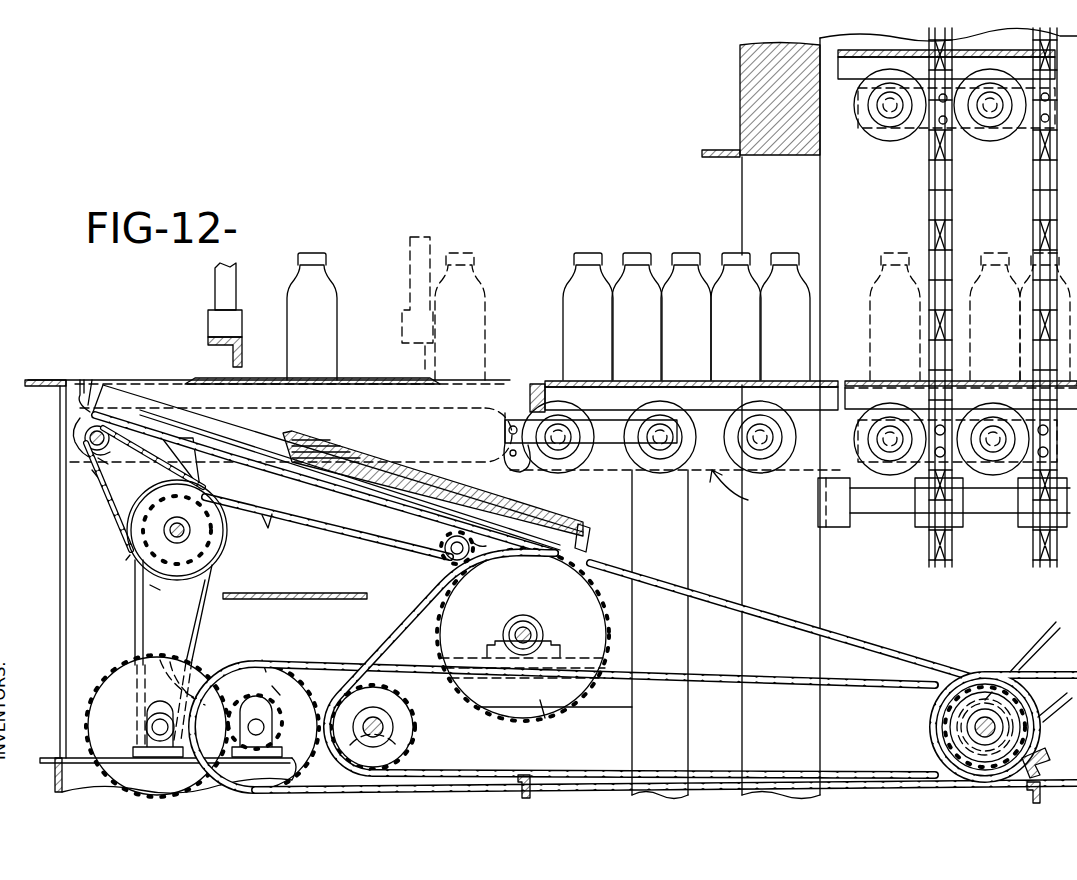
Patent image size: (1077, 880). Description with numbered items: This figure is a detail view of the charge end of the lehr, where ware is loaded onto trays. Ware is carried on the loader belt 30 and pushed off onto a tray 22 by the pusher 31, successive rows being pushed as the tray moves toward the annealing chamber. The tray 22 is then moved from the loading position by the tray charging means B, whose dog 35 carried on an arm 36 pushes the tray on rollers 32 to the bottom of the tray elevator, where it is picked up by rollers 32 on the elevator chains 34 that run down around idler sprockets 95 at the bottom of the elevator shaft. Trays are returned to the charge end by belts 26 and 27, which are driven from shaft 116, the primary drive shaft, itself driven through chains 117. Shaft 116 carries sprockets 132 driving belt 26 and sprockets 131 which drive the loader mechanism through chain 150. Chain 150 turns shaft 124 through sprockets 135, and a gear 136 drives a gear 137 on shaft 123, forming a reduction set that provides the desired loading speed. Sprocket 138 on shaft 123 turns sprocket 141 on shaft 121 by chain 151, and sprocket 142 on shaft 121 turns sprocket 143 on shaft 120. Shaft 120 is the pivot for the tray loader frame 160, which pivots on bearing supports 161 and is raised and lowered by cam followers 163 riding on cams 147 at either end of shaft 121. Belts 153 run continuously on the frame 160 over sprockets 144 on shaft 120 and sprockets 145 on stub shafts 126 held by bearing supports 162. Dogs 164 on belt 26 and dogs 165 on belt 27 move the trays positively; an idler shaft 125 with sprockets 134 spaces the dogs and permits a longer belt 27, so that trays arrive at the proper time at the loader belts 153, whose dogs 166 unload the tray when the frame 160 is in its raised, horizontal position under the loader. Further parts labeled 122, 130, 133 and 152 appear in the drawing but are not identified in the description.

The tray 22 is at (515, 512).
The belt 26 is at (1047, 735).
The belt 27 is at (858, 633).
The belt 30 is at (250, 380).
The pusher 31 is at (210, 354).
The rollers 32 is at (655, 462).
The elevator chains 34 is at (1035, 208).
The dog 35 is at (528, 405).
The arm 36 is at (610, 440).
The idler sprockets 95 is at (1033, 561).
The shaft 116 is at (942, 735).
The chains 117 is at (1040, 614).
The shaft 120 is at (84, 433).
The shaft 121 is at (170, 531).
The sprocket 122 is at (530, 630).
The shaft 123 is at (152, 727).
The shaft 124 is at (290, 702).
The idler shaft 125 is at (393, 727).
The stub shafts 126 is at (448, 556).
The hub 130 is at (995, 690).
The sprockets 131 is at (940, 722).
The sprockets 132 is at (938, 703).
The teeth 133 is at (542, 706).
The sprockets 134 is at (410, 748).
The sprockets 135 is at (266, 666).
The gear 136 is at (272, 690).
The gear 137 is at (122, 672).
The sprocket 138 is at (165, 706).
The sprocket 141 is at (152, 586).
The sprocket 142 is at (128, 520).
The sprocket 143 is at (90, 450).
The sprockets 144 is at (100, 458).
The sprockets 145 is at (443, 540).
The cams 147 is at (128, 558).
The chain 150 is at (737, 676).
The chain 151 is at (137, 618).
The arm 152 is at (95, 472).
The belts 153 is at (335, 530).
The tray loader frame 160 is at (100, 392).
The bearing supports 161 is at (82, 378).
The bearing supports 162 is at (499, 537).
The cam followers 163 is at (258, 466).
The dogs 164 is at (1026, 794).
The dogs 165 is at (585, 545).
The dogs 166 is at (267, 528).
The tray charging means B is at (737, 491).